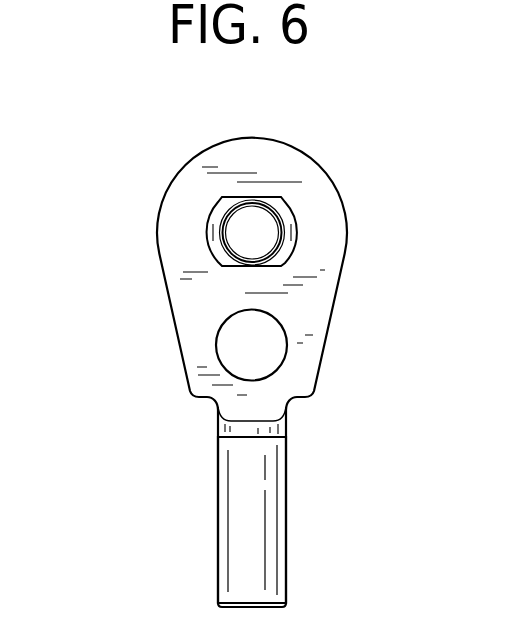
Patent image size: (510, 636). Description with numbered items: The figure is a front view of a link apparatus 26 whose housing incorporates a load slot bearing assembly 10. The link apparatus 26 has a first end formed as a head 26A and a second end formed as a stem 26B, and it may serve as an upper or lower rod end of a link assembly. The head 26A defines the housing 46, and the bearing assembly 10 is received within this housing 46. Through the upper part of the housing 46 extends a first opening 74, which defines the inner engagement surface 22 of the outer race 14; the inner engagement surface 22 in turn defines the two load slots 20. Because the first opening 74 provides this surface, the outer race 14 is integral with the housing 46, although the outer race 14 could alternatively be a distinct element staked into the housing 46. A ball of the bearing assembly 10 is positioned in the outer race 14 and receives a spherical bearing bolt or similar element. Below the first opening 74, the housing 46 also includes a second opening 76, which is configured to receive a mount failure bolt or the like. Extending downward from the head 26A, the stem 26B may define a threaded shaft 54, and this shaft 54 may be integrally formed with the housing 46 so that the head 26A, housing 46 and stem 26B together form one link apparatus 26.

The bearing assembly 10 is at (320, 211).
The link apparatus 26 is at (182, 116).
The head 26A is at (142, 181).
The stem 26B is at (190, 527).
The housing 46 is at (316, 163).
The inner engagement surface 22 is at (232, 248).
The outer race 14 is at (243, 268).
The load slots 20 is at (289, 252).
The first opening 74 is at (259, 222).
The second opening 76 is at (273, 355).
The threaded shaft 54 is at (286, 522).